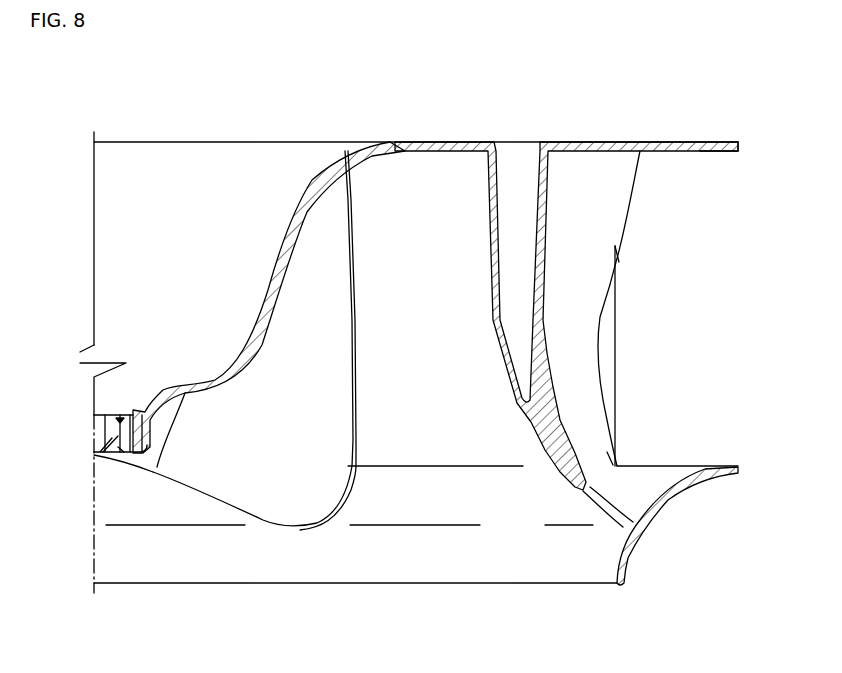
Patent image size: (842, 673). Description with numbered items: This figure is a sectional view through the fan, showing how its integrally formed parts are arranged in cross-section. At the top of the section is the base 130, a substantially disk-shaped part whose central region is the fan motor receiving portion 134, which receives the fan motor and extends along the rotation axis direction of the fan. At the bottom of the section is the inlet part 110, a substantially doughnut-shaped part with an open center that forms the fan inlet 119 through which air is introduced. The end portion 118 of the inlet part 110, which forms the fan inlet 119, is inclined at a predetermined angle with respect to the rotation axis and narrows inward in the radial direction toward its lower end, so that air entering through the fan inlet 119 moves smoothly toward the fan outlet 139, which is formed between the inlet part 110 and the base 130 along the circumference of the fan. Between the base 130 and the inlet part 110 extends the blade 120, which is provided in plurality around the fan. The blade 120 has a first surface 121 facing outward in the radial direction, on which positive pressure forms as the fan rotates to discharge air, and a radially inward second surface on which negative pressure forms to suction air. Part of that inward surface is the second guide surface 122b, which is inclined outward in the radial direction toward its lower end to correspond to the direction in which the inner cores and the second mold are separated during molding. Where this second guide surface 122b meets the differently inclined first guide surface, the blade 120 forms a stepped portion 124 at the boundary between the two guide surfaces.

The inlet part 110 is at (458, 592).
The end portion 118 is at (620, 584).
The fan inlet 119 is at (399, 583).
The blade 120 is at (643, 337).
The first surface 121 is at (600, 220).
The second guide surface 122b is at (277, 500).
The stepped portion 124 is at (170, 437).
The base 130 is at (433, 128).
The fan motor receiving portion 134 is at (293, 227).
The fan outlet 139 is at (714, 151).